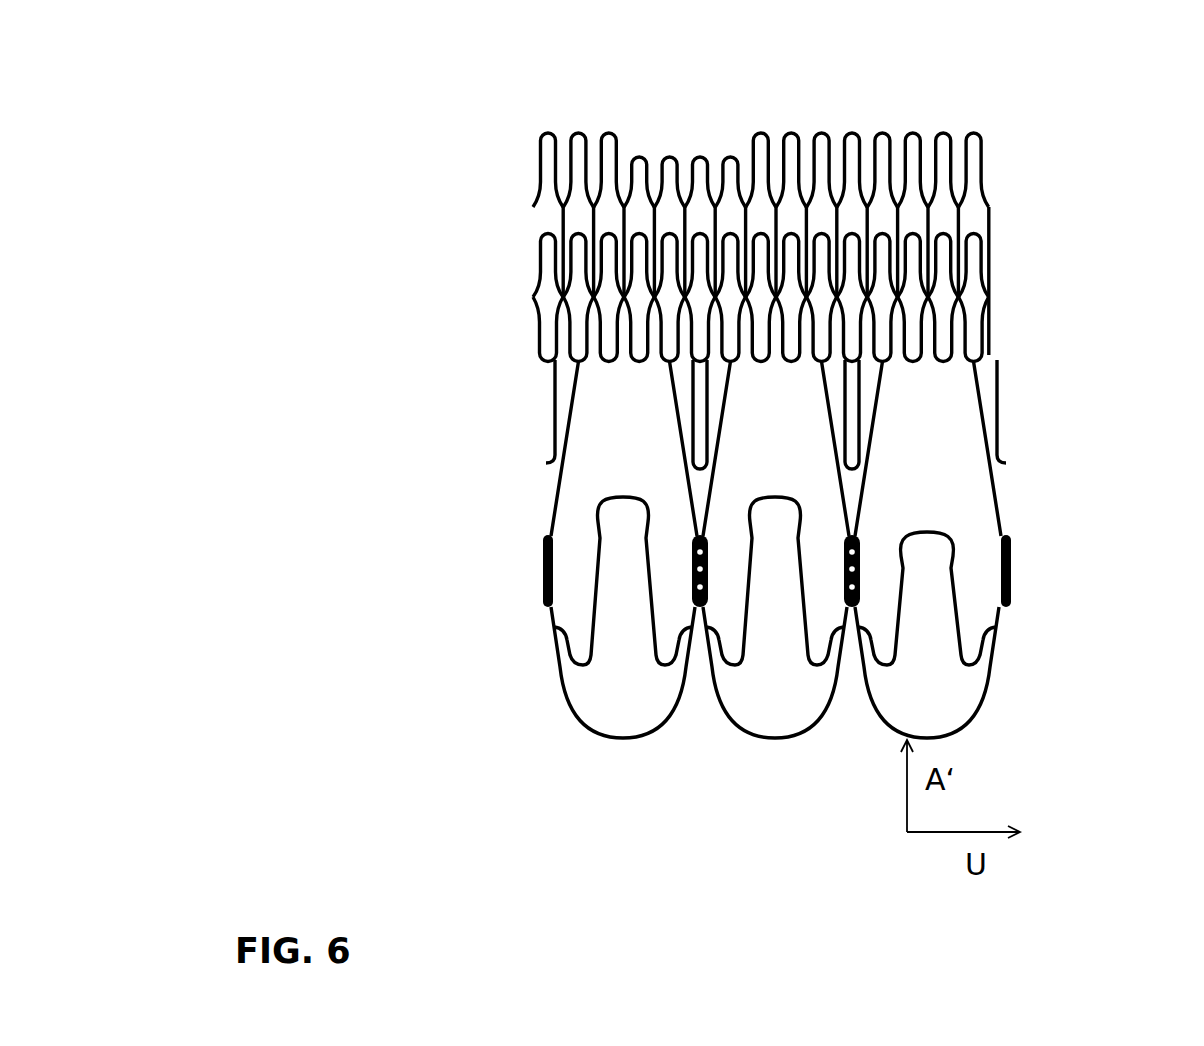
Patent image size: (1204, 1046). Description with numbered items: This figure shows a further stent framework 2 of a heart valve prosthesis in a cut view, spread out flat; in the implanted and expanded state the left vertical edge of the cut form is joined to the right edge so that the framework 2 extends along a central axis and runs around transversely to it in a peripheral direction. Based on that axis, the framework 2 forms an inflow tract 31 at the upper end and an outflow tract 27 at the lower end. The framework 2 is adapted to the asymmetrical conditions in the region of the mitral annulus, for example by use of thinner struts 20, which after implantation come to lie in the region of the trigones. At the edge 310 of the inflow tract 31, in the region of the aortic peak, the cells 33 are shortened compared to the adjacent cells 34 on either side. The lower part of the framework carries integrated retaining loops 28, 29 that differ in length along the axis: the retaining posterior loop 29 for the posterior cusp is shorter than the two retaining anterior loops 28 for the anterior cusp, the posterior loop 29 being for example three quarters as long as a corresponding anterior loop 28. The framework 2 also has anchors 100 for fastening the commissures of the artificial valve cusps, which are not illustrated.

The stent framework 2 is at (798, 451).
The struts 20 is at (975, 168).
The outflow tract 27 is at (551, 707).
The retaining anterior loops 28 is at (750, 514).
The retaining posterior loop 29 is at (963, 557).
The inflow tract 31 is at (812, 199).
The edge of the inflow tract 310 is at (887, 124).
The cells 33 is at (680, 147).
The adjacent cells 34 is at (606, 144).
The anchors 100 is at (699, 612).